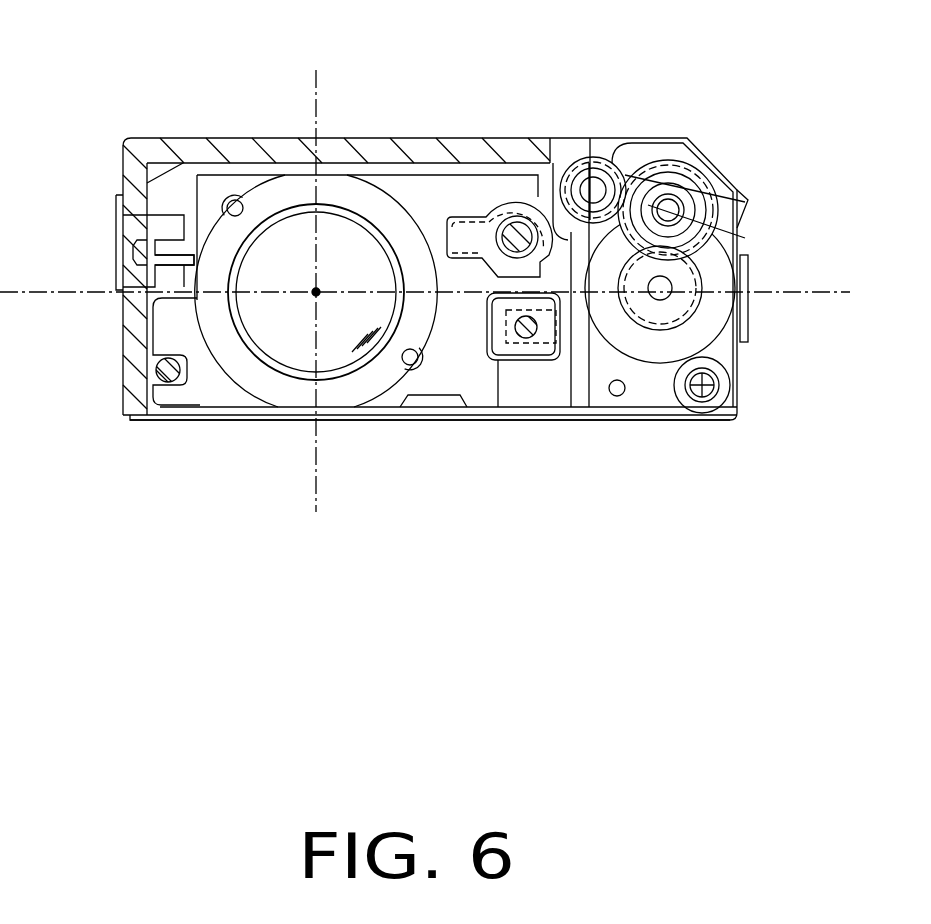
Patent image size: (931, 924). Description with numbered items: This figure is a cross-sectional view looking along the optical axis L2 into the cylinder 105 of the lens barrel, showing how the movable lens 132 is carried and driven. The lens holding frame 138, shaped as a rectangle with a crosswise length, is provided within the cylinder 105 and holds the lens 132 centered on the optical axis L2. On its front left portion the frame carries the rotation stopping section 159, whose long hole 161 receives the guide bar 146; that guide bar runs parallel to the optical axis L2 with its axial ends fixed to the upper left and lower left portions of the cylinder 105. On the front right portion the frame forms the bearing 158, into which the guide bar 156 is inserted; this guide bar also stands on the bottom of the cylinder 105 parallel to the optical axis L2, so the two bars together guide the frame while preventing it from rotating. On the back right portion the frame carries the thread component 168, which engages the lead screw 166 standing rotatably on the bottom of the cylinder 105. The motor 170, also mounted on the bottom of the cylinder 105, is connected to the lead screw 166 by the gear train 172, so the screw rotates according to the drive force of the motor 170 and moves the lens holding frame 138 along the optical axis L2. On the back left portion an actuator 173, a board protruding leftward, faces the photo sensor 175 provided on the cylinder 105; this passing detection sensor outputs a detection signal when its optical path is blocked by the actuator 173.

The cylinder 105 is at (268, 138).
The lens 132 is at (350, 243).
The lens holding frame 138 is at (276, 410).
The guide bar 146 is at (157, 368).
The guide bar 156 is at (523, 338).
The bearing 158 is at (536, 362).
The rotation stopping section 159 is at (173, 410).
The long hole 161 is at (150, 383).
The lead screw 166 is at (517, 216).
The thread component 168 is at (565, 165).
The motor 170 is at (722, 348).
The gear train 172 is at (690, 162).
The actuator 173 is at (173, 252).
The photo sensor 175 is at (160, 212).
The optical axis L2 is at (313, 295).